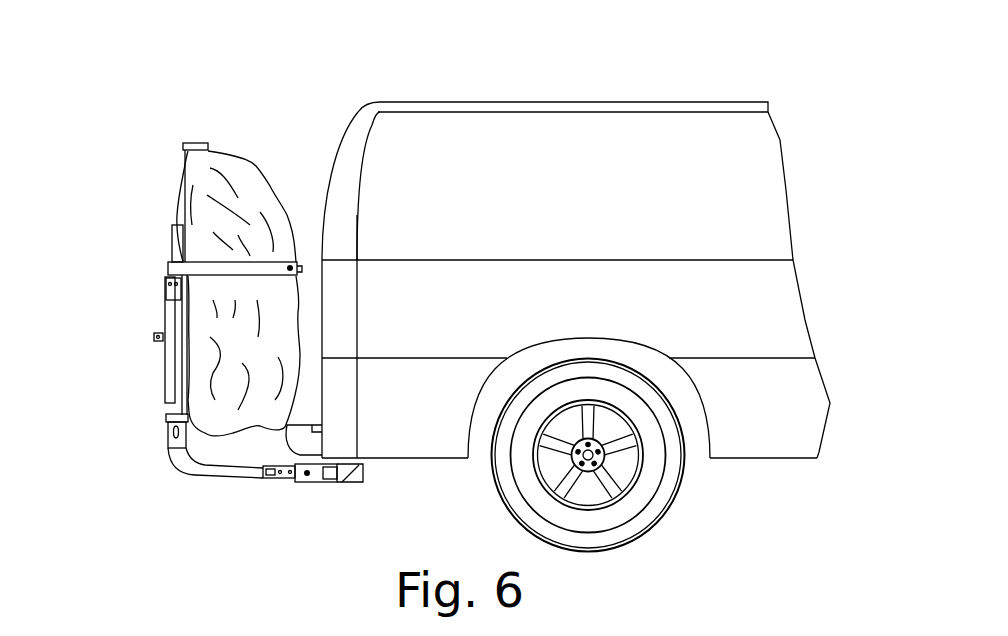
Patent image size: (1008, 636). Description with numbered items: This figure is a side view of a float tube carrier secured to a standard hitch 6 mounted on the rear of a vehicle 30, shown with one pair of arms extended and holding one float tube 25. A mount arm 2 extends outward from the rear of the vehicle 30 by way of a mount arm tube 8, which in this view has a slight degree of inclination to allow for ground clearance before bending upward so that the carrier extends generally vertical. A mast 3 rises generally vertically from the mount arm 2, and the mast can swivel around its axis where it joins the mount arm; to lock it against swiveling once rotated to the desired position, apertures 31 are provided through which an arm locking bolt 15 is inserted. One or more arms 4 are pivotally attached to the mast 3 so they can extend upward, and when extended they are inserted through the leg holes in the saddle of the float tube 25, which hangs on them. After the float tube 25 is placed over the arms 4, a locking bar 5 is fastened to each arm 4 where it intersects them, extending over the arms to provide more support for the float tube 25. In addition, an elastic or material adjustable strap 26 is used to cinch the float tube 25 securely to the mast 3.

The mount arm 2 is at (272, 482).
The mast 3 is at (175, 245).
The arm 4 is at (165, 312).
The locking bar 5 is at (155, 340).
The hitch 6 is at (303, 483).
The mount arm tube 8 is at (222, 477).
The arm locking bolt 15 is at (172, 435).
The float tube 25 is at (230, 180).
The adjustable strap 26 is at (160, 268).
The vehicle 30 is at (647, 133).
The apertures 31 is at (168, 425).